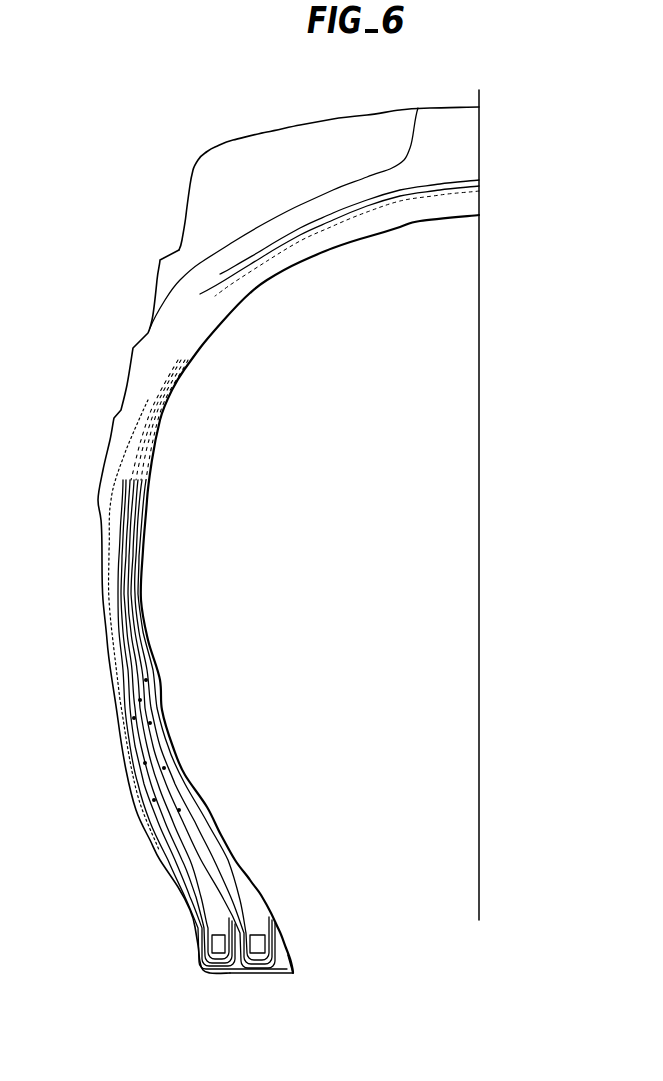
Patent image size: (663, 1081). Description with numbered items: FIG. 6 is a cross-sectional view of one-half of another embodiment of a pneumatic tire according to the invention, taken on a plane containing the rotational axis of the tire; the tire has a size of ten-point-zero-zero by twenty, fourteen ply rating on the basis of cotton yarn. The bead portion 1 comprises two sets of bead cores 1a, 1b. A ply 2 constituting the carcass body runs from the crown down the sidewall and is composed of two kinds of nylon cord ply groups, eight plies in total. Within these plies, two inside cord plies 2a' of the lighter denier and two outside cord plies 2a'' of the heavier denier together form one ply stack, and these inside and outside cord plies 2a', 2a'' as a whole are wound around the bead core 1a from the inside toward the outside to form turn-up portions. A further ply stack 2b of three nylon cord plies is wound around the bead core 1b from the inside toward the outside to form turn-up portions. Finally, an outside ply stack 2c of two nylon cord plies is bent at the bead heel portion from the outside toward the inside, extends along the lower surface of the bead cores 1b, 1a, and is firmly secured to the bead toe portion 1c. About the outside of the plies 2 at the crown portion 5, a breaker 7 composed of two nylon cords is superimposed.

The bead portion 1 is at (268, 926).
The bead core 1a is at (257, 950).
The bead core 1b is at (214, 948).
The bead toe portion 1c is at (288, 961).
The ply 2 is at (132, 512).
The inside cord plies 2a' is at (202, 724).
The outside cord plies 2a'' is at (224, 724).
The ply stack 2b is at (155, 755).
The outside ply stack 2c is at (124, 688).
The crown portion 5 is at (350, 136).
The breaker 7 is at (457, 178).